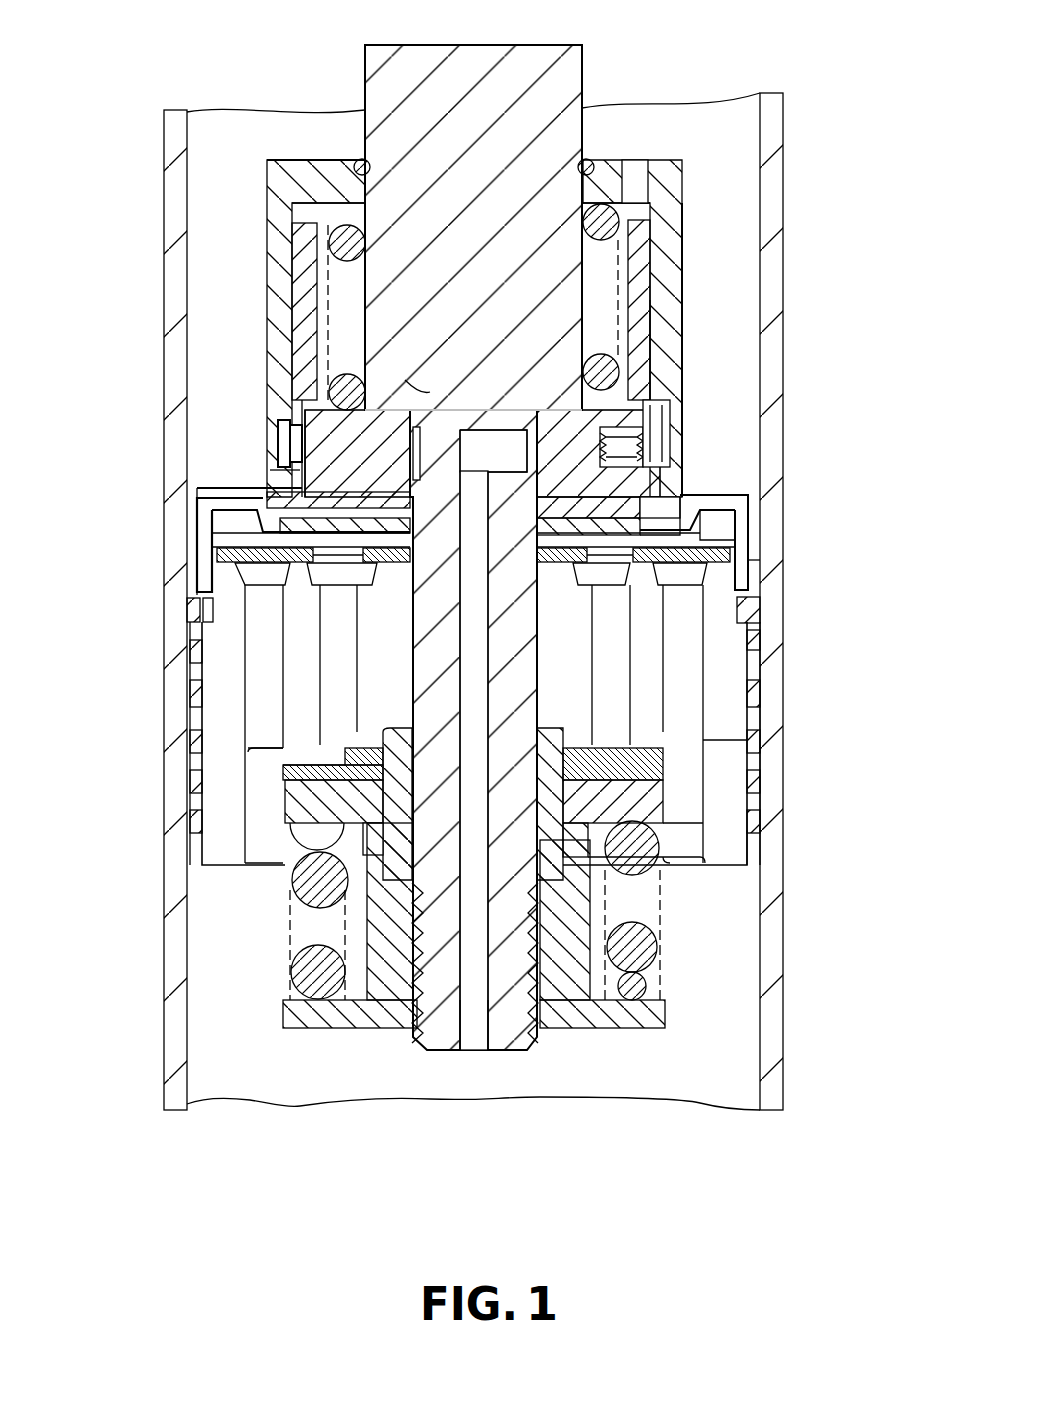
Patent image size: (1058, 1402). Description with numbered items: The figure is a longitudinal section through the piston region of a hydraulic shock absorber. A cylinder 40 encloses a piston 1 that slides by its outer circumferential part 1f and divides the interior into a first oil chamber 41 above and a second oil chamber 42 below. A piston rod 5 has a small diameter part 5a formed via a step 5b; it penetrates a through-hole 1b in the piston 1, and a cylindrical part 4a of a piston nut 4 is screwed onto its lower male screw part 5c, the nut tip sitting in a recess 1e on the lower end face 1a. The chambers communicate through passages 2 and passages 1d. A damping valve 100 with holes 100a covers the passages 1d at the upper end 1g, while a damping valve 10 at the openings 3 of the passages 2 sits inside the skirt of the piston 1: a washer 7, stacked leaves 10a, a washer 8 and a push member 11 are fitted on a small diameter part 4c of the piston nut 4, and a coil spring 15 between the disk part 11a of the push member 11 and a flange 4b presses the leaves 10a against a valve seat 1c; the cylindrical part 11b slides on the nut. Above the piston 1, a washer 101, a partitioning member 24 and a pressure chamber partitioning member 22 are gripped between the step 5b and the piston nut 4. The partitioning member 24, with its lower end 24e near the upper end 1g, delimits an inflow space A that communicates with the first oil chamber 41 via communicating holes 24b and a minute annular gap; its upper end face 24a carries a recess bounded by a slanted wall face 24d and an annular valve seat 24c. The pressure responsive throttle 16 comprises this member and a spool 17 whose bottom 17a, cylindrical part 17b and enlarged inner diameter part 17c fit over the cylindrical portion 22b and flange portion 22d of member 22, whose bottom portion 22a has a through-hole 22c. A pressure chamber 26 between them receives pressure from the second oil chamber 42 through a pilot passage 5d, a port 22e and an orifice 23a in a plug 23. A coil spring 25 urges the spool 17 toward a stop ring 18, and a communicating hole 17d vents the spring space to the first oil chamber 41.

The piston 1 is at (768, 716).
The lower end face 1a is at (758, 835).
The through-hole 1b is at (757, 696).
The valve seat 1c is at (655, 762).
The passages 1d is at (252, 678).
The recess 1e is at (250, 842).
The outer circumferential part 1f is at (745, 850).
The upper end 1g is at (252, 622).
The passages 2 is at (335, 692).
The openings 3 is at (268, 775).
The piston nut 4 is at (377, 1034).
The cylindrical part 4a is at (590, 1012).
The flange 4b is at (293, 1030).
The small diameter part 4c is at (312, 910).
The piston rod 5 is at (364, 62).
The small diameter part 5a is at (395, 880).
The step 5b is at (283, 398).
The threaded portion 5c is at (548, 1005).
The pilot passage 5d is at (480, 1042).
The washer 7 is at (663, 770).
The washer 8 is at (650, 800).
The damping valve 10 is at (268, 813).
The leaves 10a is at (300, 744).
The push member 11 is at (298, 852).
The disk part 11a is at (703, 872).
The cylindrical part 11b is at (690, 912).
The coil spring 15 is at (305, 978).
The pressure responsive throttle 16 is at (698, 481).
The spool 17 is at (692, 215).
The bottom 17a is at (303, 160).
The cylindrical part 17b is at (680, 250).
The enlarged inner diameter part 17c is at (300, 448).
The communicating hole 17d is at (636, 172).
The stop ring 18 is at (587, 158).
The pressure chamber partitioning member 22 is at (668, 300).
The bottom portion 22a is at (278, 435).
The cylindrical portion 22b is at (291, 262).
The through-hole 22c is at (430, 388).
The flange portion 22d is at (278, 472).
The port 22e is at (665, 345).
The plug 23 is at (640, 446).
The orifice 23a is at (657, 403).
The partitioning member 24 is at (762, 523).
The upper end face 24a is at (695, 495).
The communicating holes 24b is at (725, 545).
The annular valve seat 24c is at (300, 530).
The slanted wall face 24d is at (720, 522).
The lower end 24e is at (220, 548).
The coil spring 25 is at (297, 262).
The pressure chamber 26 is at (293, 440).
The cylinder 40 is at (775, 1000).
The first oil chamber 41 is at (737, 146).
The second oil chamber 42 is at (726, 1078).
The damping valve 100 is at (748, 560).
The holes 100a is at (205, 620).
The washer 101 is at (222, 502).
The inflow space A is at (723, 542).